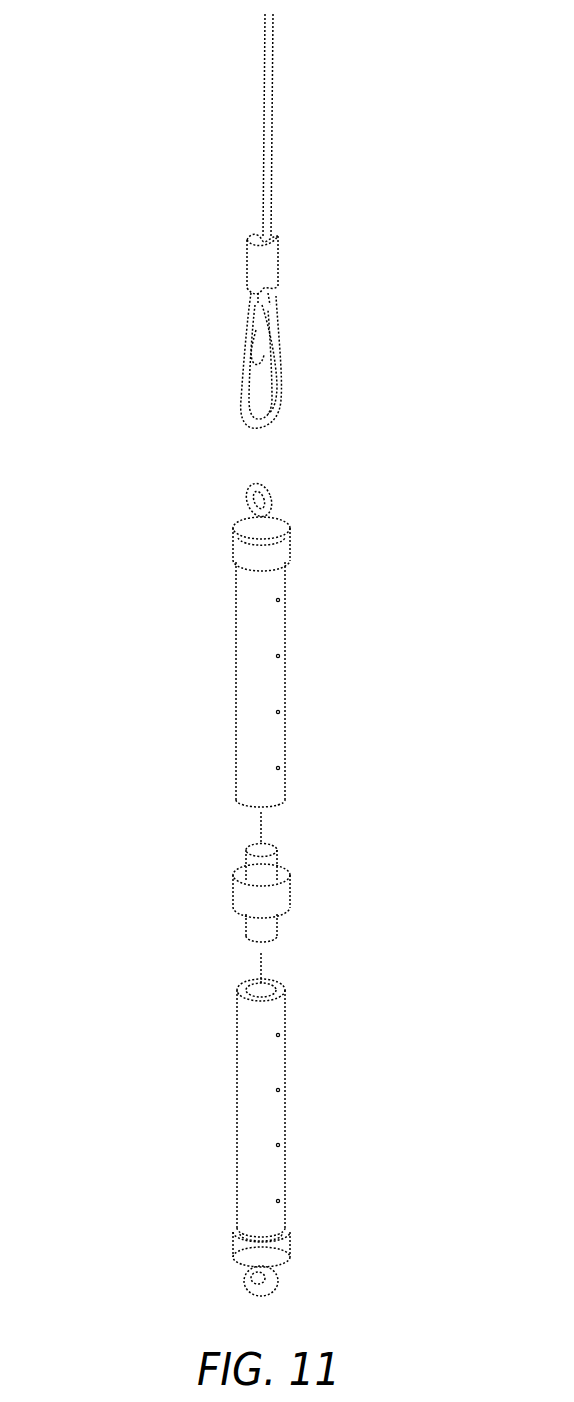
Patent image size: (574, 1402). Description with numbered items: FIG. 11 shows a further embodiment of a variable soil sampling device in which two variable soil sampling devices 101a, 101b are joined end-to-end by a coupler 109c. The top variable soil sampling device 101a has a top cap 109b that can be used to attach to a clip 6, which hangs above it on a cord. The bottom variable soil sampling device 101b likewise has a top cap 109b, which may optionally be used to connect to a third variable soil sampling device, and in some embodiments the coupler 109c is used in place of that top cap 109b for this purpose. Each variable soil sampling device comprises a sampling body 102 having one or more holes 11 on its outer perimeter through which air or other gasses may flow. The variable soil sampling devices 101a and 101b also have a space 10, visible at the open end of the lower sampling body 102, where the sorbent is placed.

The clip 6 is at (280, 403).
The space 10 is at (268, 990).
The holes 11 is at (280, 656).
The top variable soil sampling device 101a is at (175, 625).
The bottom variable soil sampling device 101b is at (233, 1111).
The sampling body 102 is at (238, 728).
The top cap 109b is at (290, 536).
The coupler 109c is at (290, 897).